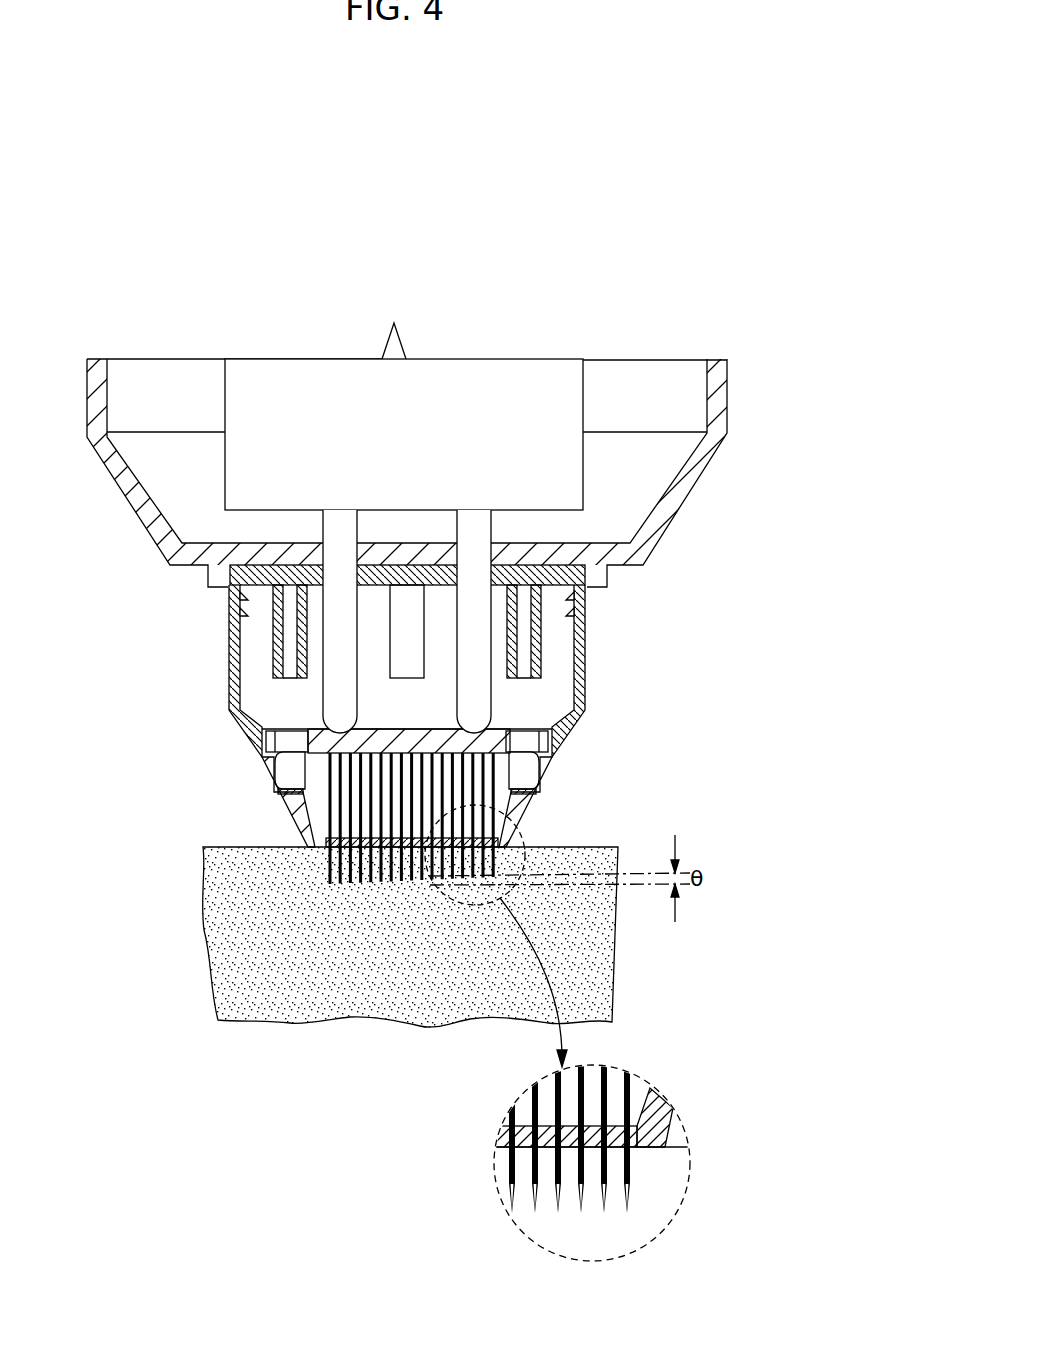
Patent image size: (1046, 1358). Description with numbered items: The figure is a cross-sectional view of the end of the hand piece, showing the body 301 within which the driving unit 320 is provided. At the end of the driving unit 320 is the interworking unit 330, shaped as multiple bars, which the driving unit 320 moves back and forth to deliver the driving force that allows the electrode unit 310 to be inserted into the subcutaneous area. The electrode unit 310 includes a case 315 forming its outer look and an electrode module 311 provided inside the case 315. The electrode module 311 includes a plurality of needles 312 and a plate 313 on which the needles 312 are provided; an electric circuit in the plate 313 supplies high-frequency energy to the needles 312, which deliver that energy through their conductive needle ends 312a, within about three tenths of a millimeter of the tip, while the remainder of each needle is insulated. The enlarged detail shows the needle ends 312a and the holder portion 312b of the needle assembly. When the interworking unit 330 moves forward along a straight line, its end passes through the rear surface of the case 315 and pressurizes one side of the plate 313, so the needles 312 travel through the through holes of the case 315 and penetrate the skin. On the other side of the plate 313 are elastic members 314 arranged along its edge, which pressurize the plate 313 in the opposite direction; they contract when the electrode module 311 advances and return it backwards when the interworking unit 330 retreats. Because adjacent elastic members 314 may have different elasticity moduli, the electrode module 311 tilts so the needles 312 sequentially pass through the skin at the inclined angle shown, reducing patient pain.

The body 301 is at (728, 373).
The electrode unit 310 is at (432, 724).
The electrode module 311 is at (300, 806).
The needles 312 is at (326, 880).
The needle end 312a is at (628, 1185).
The needle holder plate 312b is at (628, 1092).
The plate 313 is at (282, 802).
The elastic member 314 is at (268, 769).
The case 315 is at (228, 636).
The driving unit 320 is at (520, 380).
The interworking unit 330 is at (483, 530).